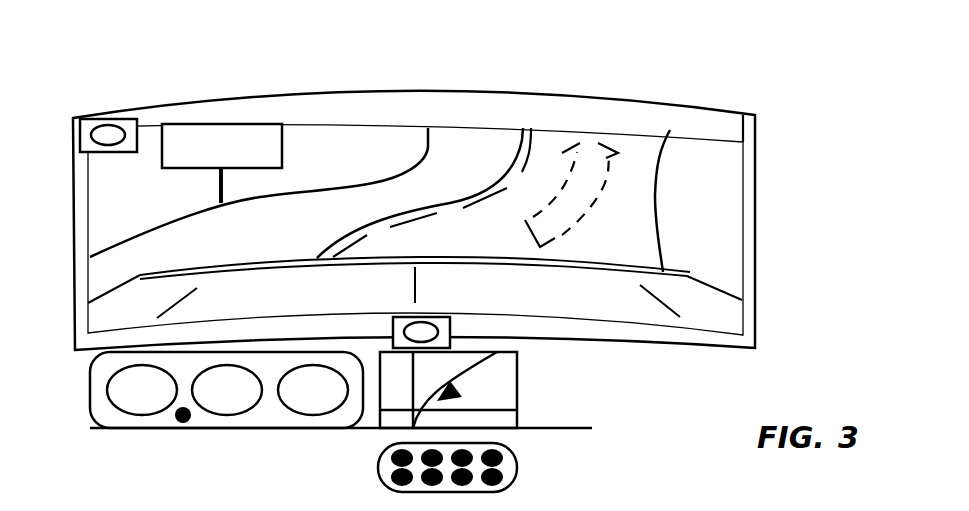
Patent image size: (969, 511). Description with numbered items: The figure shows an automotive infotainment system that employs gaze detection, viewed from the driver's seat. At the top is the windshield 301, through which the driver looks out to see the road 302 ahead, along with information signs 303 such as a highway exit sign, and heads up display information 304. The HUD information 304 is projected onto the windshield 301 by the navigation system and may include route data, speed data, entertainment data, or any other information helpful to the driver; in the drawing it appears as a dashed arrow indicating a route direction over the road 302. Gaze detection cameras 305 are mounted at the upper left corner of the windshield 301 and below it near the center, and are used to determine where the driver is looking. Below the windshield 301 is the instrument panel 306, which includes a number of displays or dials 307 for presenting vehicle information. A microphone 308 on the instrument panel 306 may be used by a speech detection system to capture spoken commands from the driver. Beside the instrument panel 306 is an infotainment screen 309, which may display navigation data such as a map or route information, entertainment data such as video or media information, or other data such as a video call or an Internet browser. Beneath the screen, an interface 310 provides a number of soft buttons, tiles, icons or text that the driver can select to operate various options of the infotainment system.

The windshield 301 is at (712, 188).
The road 302 is at (640, 170).
The information signs 303 is at (253, 123).
The heads up display information 304 is at (597, 153).
The gaze detection cameras 305 is at (112, 119).
The instrument panel 306 is at (227, 428).
The displays or dials 307 is at (315, 414).
The microphone 308 is at (182, 424).
The infotainment screen 309 is at (517, 387).
The interface 310 is at (517, 463).